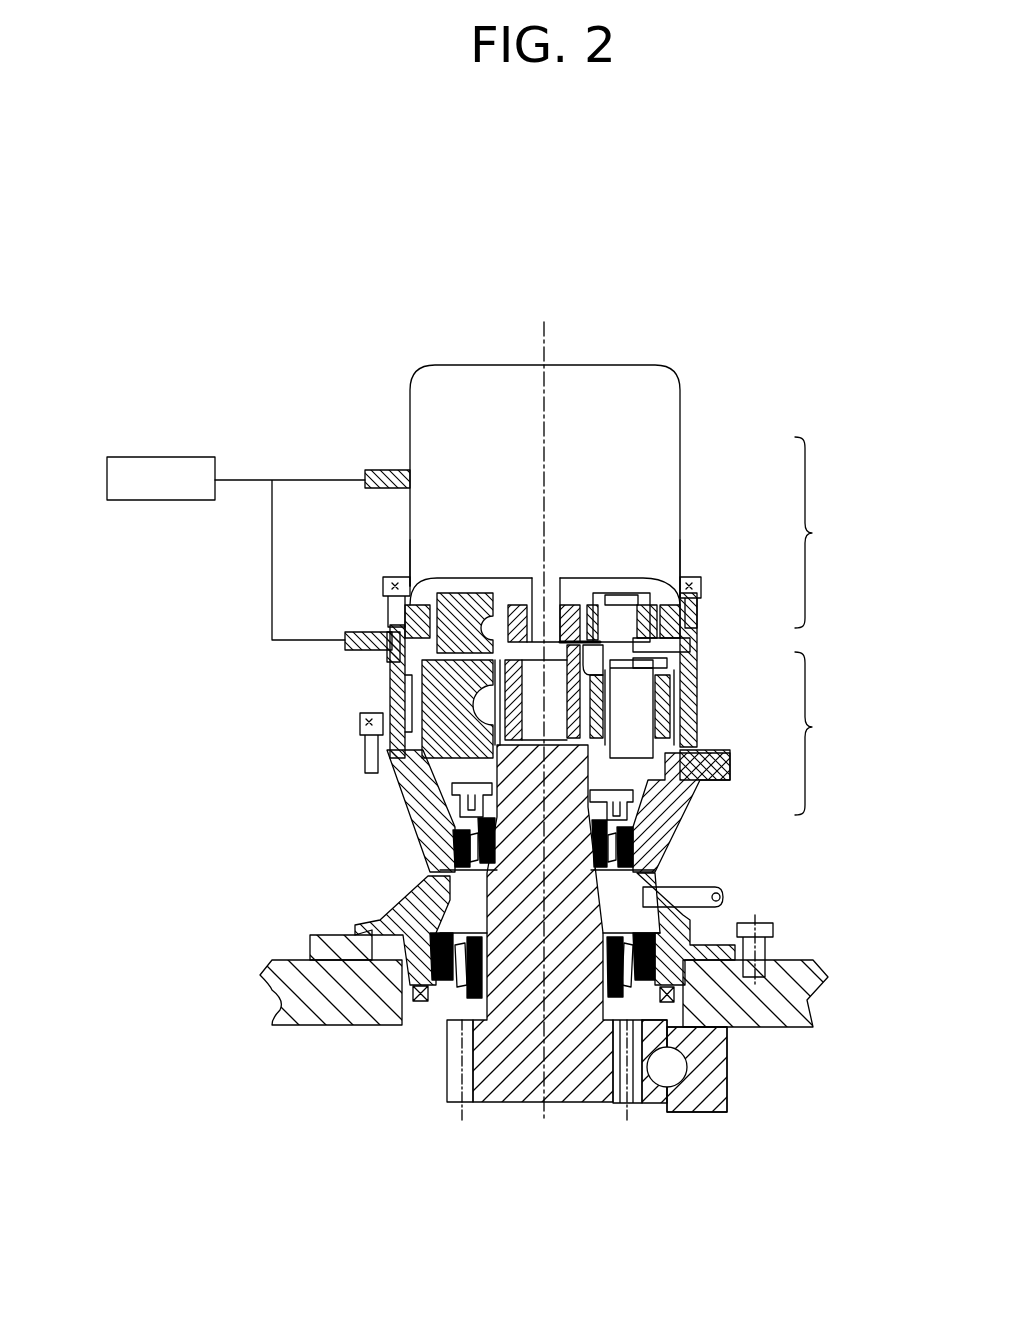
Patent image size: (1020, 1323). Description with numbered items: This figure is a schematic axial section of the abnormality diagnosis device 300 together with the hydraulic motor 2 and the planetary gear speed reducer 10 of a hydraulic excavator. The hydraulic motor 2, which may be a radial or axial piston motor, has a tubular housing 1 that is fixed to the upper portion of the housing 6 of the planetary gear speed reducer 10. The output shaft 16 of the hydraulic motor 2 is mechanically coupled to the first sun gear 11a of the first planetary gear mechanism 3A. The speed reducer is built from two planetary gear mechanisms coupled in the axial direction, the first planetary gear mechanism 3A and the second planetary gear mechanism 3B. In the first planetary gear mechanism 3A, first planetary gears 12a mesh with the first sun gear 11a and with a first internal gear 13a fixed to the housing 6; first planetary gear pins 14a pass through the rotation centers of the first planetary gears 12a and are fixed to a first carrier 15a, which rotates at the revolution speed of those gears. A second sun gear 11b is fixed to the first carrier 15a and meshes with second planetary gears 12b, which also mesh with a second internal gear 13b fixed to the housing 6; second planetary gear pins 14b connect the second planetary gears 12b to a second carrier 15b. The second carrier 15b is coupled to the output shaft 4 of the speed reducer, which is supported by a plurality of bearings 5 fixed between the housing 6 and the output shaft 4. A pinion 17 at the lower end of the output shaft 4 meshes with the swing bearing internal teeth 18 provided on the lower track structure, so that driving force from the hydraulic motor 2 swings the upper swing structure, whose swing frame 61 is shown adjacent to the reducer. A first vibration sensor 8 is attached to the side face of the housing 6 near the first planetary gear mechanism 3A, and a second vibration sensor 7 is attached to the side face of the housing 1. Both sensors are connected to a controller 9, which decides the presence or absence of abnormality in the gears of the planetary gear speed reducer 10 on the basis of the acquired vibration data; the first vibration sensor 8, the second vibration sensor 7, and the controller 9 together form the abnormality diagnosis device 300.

The abnormality diagnosis device 300 is at (128, 352).
The housing (motor housing) 1 is at (418, 374).
The hydraulic motor 2 is at (416, 456).
The first planetary gear mechanism 3A is at (823, 532).
The second planetary gear mechanism 3B is at (822, 733).
The output shaft 4 is at (527, 1095).
The bearings 5 is at (455, 850).
The housing (speed reducer housing) 6 is at (395, 700).
The second vibration sensor 7 is at (368, 478).
The first vibration sensor 8 is at (365, 645).
The controller 9 is at (160, 457).
The planetary gear speed reducer 10 is at (293, 758).
The first sun gear 11a is at (600, 600).
The second sun gear 11b is at (620, 655).
The first planetary gears 12a is at (640, 612).
The second planetary gears 12b is at (605, 700).
The first internal gear 13a is at (665, 640).
The second internal gear 13b is at (672, 722).
The first planetary gear pins 14a is at (610, 606).
The second planetary gear pins 14b is at (628, 750).
The first carrier 15a is at (658, 670).
The second carrier 15b is at (625, 785).
The output shaft (rotary shaft) 16 is at (530, 592).
The pinion 17 is at (458, 1060).
The swing bearing internal teeth 18 is at (648, 1105).
The swing frame 61 is at (795, 966).